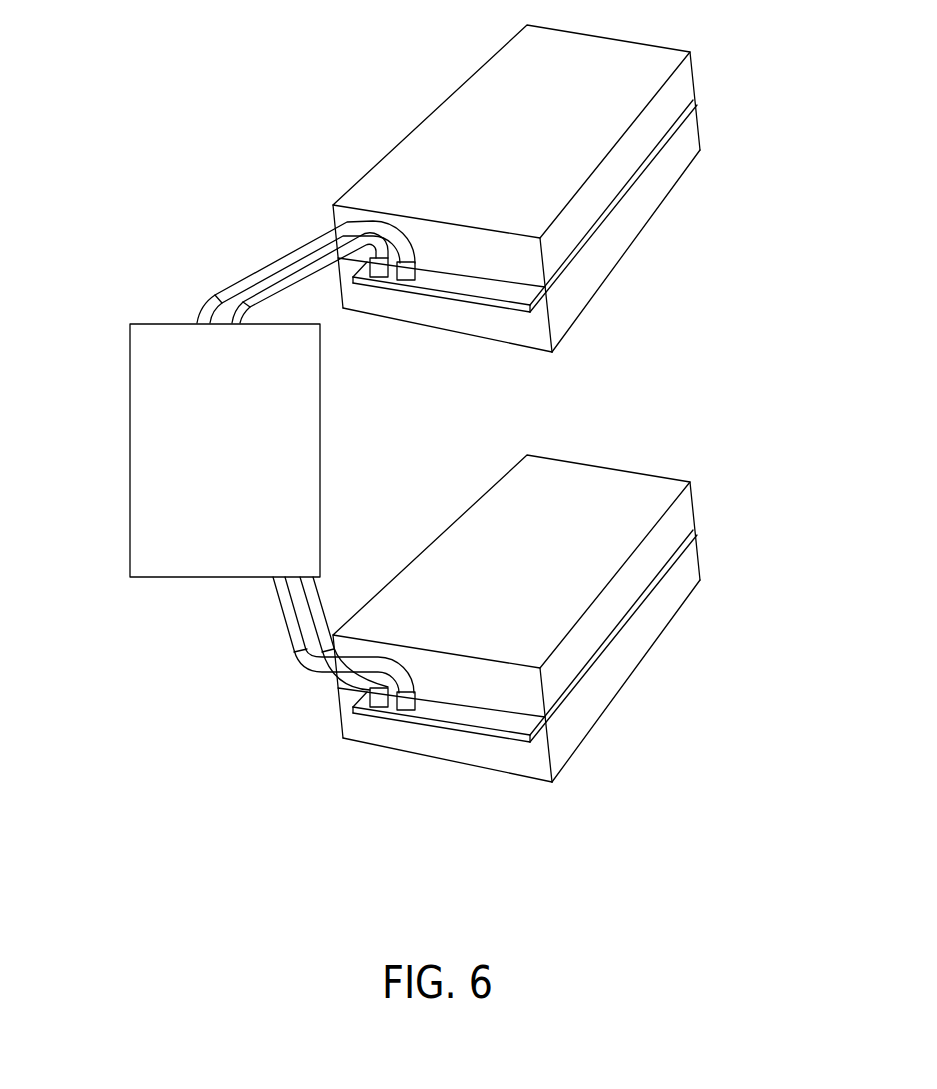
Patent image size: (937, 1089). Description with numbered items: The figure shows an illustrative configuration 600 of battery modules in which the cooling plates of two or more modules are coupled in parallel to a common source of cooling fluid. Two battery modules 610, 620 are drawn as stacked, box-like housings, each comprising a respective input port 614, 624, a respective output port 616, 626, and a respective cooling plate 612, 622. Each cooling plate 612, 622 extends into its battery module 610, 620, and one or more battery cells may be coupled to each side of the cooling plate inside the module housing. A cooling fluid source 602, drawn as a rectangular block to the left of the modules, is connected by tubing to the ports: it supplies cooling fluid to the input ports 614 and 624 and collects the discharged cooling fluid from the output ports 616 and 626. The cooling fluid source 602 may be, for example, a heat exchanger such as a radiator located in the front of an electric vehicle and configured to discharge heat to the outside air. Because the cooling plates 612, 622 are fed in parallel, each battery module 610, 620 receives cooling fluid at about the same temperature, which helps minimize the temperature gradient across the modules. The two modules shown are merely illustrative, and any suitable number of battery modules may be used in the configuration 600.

The configuration of battery modules 600 is at (143, 58).
The cooling fluid source 602 is at (163, 433).
The battery module 610 is at (712, 240).
The cooling plate 612 is at (521, 291).
The input port 614 is at (372, 288).
The output port 616 is at (404, 290).
The battery module 620 is at (712, 670).
The cooling plate 622 is at (521, 721).
The input port 624 is at (372, 718).
The output port 626 is at (404, 720).